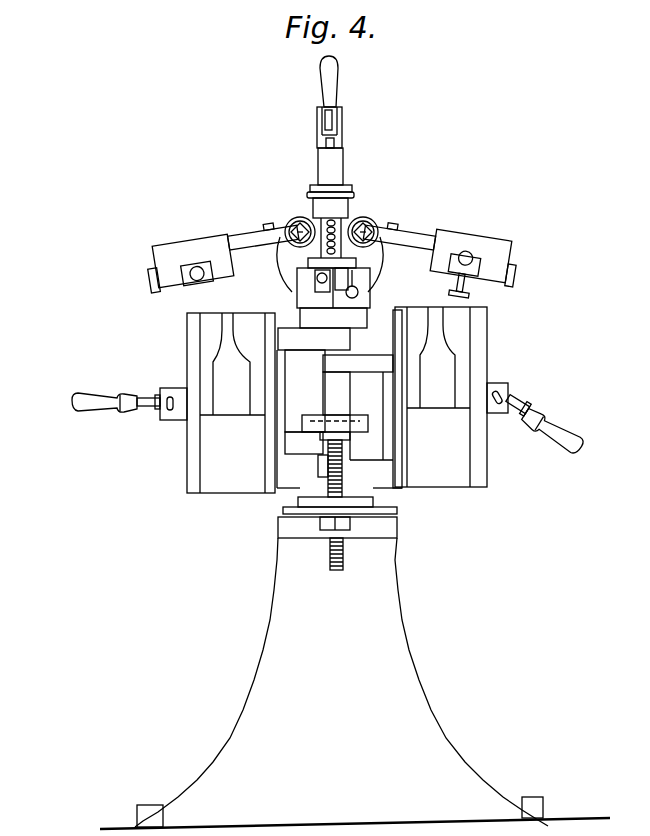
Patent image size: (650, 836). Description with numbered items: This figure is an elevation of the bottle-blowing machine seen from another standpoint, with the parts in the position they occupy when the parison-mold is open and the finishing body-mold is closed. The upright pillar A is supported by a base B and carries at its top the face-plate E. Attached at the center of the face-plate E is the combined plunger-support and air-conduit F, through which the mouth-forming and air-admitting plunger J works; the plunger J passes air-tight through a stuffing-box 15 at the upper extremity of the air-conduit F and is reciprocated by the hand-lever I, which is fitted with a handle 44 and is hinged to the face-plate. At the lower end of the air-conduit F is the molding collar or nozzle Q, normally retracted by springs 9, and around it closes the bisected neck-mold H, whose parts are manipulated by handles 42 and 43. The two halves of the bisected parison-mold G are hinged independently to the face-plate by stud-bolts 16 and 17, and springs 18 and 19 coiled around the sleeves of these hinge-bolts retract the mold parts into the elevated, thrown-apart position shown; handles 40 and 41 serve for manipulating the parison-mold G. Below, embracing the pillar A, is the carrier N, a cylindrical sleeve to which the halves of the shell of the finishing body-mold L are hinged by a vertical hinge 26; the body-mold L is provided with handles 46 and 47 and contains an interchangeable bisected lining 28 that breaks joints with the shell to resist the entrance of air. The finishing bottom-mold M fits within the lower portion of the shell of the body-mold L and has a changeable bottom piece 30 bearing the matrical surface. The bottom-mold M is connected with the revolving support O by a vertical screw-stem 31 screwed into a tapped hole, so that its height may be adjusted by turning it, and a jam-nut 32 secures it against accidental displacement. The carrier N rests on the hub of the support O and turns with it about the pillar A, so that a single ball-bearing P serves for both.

The hand-lever I is at (335, 81).
The handle 44 is at (322, 82).
The plunger J is at (332, 173).
The stuffing-box 15 is at (330, 208).
The combined plunger-support and air-conduit F is at (357, 219).
The springs 9 is at (297, 217).
The face-plate E is at (342, 264).
The neck-mold H is at (333, 289).
The nozzle Q is at (292, 278).
The handle 42 is at (358, 293).
The handle 43 is at (289, 292).
The parison-mold G is at (193, 246).
The handle 41 is at (192, 284).
The handle 40 is at (478, 258).
The stud-bolt 17 is at (332, 239).
The spring 19 is at (264, 224).
The stud-bolt 16 is at (393, 221).
The spring 18 is at (425, 234).
The pillar A is at (351, 330).
The carrier N is at (339, 399).
The hinge 26 is at (358, 385).
The bottom piece 30 is at (357, 418).
The support O is at (313, 464).
The bottom-mold M is at (330, 487).
The ball-bearing P is at (380, 513).
The jam-nut 32 is at (323, 538).
The screw-stem 31 is at (345, 565).
The finishing body-mold L is at (496, 362).
The lining 28 is at (335, 361).
The handle 47 is at (74, 403).
The handle 46 is at (576, 442).
The base B is at (355, 683).